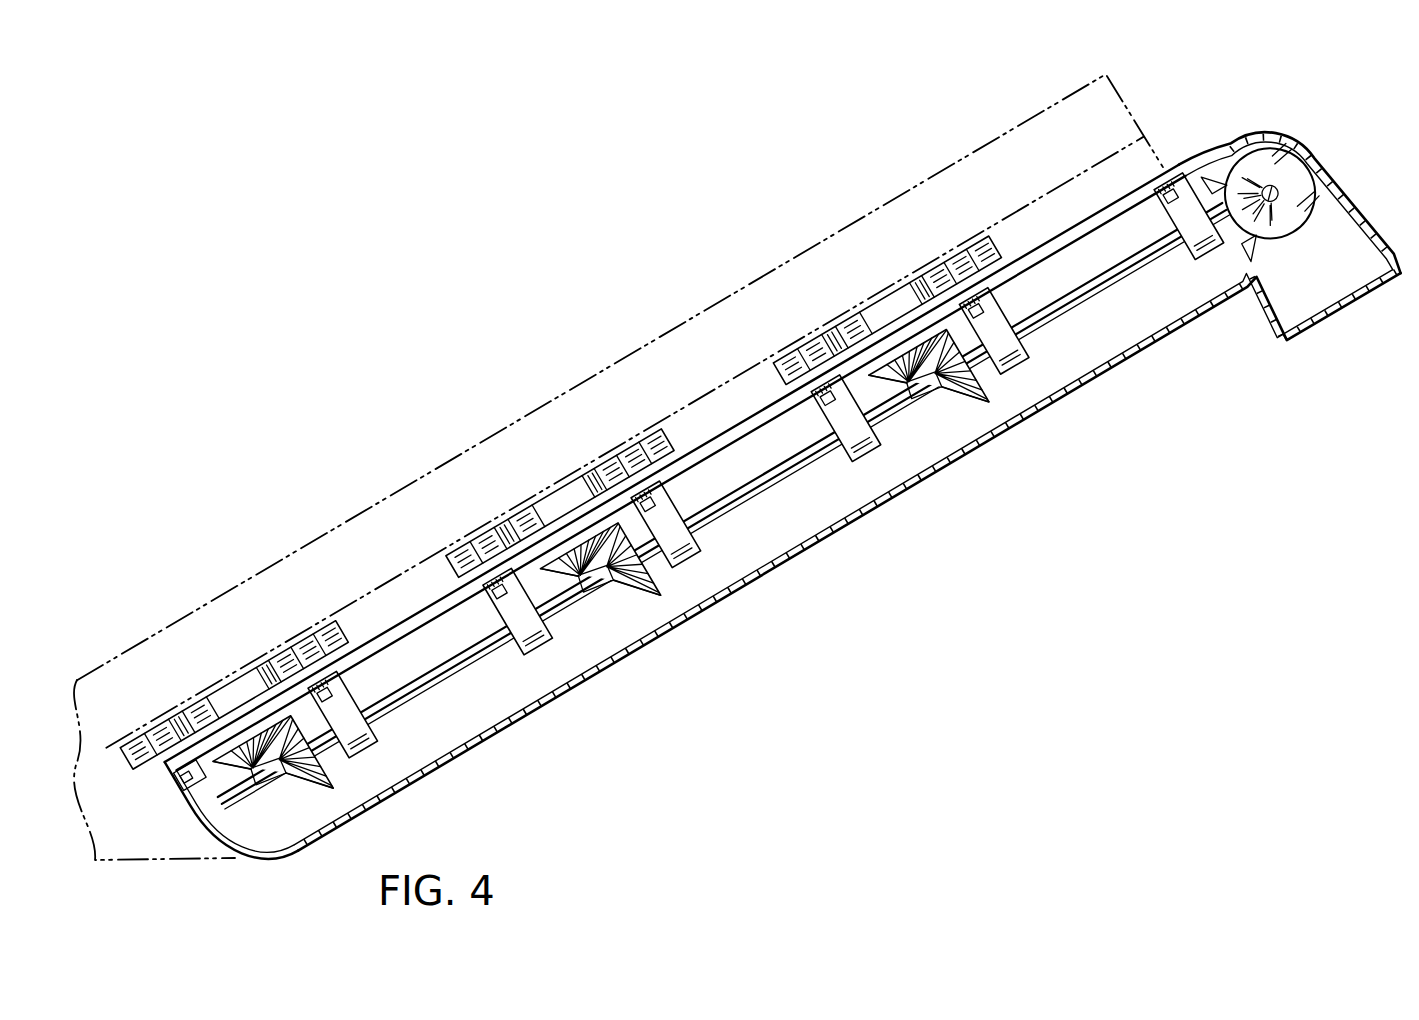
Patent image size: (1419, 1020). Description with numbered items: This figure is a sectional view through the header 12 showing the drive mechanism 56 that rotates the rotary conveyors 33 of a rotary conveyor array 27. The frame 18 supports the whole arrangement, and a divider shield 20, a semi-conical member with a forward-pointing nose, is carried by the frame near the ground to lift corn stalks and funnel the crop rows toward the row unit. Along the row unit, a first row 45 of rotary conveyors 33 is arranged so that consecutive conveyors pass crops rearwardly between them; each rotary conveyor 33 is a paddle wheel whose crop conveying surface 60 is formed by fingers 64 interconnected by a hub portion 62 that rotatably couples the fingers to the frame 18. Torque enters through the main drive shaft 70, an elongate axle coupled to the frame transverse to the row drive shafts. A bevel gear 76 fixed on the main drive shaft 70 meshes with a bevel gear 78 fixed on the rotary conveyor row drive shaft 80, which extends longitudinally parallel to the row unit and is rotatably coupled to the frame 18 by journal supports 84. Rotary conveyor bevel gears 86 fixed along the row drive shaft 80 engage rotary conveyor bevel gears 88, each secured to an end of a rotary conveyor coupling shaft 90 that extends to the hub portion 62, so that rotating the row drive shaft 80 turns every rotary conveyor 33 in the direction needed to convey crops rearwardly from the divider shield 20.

The header 12 is at (1281, 97).
The frame 18 is at (1123, 204).
The divider shield 20 is at (138, 861).
The rotary conveyor array 27 is at (958, 226).
The rotary conveyor 33 is at (878, 303).
The first row 45 is at (927, 233).
The drive mechanism 56 is at (397, 711).
The crop conveying surface 60 is at (488, 530).
The hub portion 62 is at (852, 328).
The fingers 64 is at (450, 553).
The main drive shaft 70 is at (1267, 186).
The bevel gear 76 is at (1313, 228).
The bevel gear 78 is at (1259, 238).
The rotary conveyor row drive shaft 80 is at (776, 493).
The journal support 84 is at (1196, 268).
The rotary conveyor bevel gear 86 is at (965, 412).
The rotary conveyor bevel gear 88 is at (890, 392).
The rotary conveyor coupling shaft 90 is at (543, 570).